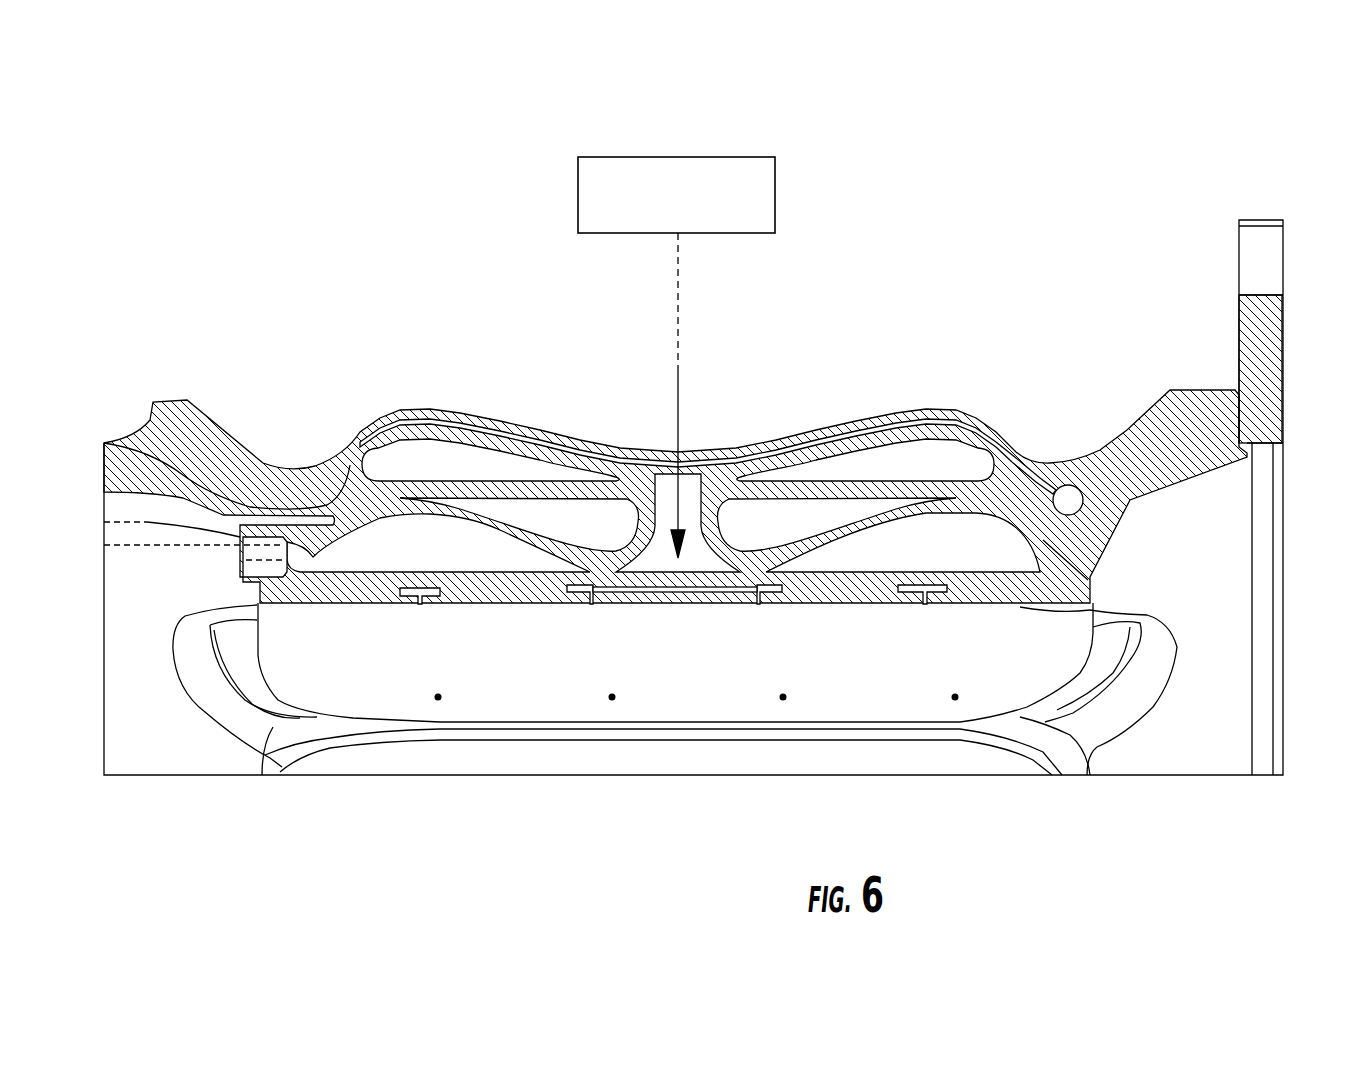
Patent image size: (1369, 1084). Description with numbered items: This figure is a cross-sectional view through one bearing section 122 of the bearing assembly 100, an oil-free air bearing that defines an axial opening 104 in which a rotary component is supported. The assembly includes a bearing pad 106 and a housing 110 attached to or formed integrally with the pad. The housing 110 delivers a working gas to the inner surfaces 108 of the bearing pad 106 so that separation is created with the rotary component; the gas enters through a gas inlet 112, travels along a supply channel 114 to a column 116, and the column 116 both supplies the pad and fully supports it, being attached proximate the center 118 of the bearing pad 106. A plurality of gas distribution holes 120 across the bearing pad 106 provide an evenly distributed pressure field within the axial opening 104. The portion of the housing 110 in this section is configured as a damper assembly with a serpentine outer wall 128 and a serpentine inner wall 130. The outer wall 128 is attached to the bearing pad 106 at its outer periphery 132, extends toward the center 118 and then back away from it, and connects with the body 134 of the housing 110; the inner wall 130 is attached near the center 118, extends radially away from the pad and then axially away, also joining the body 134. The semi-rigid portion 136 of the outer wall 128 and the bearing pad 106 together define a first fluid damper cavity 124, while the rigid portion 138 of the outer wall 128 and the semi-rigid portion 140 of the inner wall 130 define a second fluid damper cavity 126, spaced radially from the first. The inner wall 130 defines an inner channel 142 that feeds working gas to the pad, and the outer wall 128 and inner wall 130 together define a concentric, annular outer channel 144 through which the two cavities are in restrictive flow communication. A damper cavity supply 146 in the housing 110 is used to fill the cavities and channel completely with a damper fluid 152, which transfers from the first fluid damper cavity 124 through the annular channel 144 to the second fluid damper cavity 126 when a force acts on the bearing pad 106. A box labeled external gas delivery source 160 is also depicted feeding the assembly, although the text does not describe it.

The bearing assembly 100 is at (1080, 186).
The axial opening 104 is at (950, 752).
The bearing pad 106 is at (1067, 650).
The inner surfaces 108 is at (1018, 607).
The housing 110 is at (1000, 405).
The gas inlet 112 is at (148, 402).
The supply channel 114 is at (540, 432).
The column 116 is at (697, 527).
The center 118 is at (680, 623).
The gas distribution holes 120 is at (925, 610).
The bearing section 122 is at (948, 368).
The first fluid damper cavity 124 is at (398, 548).
The second fluid damper cavity 126 is at (455, 468).
The outer wall 128 is at (573, 540).
The inner wall 130 is at (656, 530).
The outer periphery 132 is at (1100, 565).
The body 134 is at (200, 450).
The semi-rigid portion 136 is at (483, 542).
The rigid portion 138 is at (498, 478).
The semi-rigid portion 140 is at (487, 438).
The inner channel 142 is at (688, 498).
The outer channel 144 is at (690, 537).
The damper cavity supply 146 is at (260, 568).
The damper fluid 152 is at (679, 378).
The external gas delivery source 160 is at (777, 183).